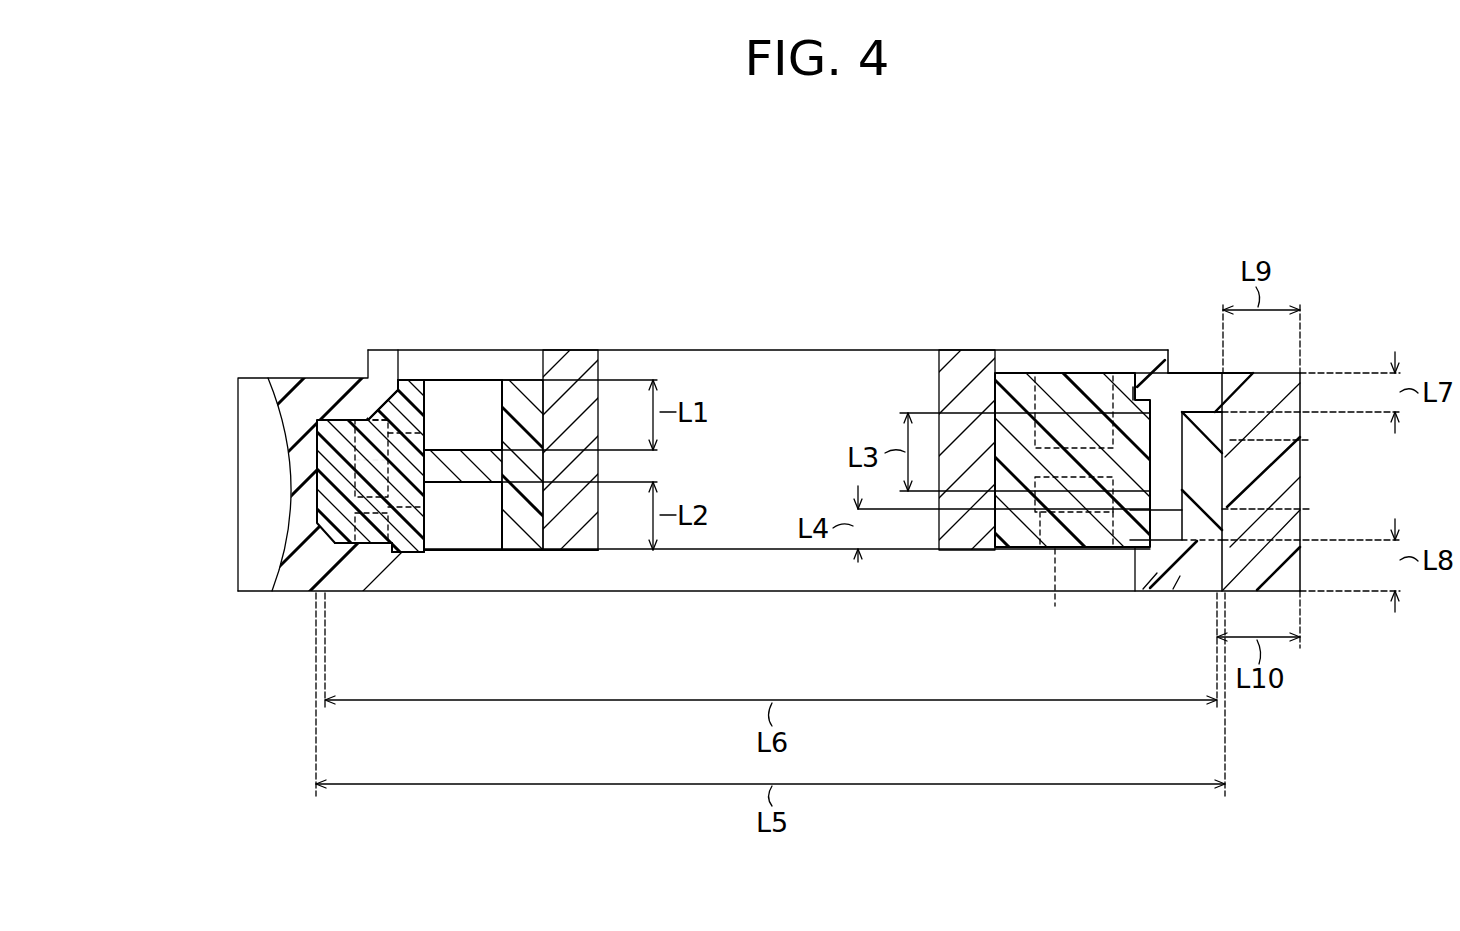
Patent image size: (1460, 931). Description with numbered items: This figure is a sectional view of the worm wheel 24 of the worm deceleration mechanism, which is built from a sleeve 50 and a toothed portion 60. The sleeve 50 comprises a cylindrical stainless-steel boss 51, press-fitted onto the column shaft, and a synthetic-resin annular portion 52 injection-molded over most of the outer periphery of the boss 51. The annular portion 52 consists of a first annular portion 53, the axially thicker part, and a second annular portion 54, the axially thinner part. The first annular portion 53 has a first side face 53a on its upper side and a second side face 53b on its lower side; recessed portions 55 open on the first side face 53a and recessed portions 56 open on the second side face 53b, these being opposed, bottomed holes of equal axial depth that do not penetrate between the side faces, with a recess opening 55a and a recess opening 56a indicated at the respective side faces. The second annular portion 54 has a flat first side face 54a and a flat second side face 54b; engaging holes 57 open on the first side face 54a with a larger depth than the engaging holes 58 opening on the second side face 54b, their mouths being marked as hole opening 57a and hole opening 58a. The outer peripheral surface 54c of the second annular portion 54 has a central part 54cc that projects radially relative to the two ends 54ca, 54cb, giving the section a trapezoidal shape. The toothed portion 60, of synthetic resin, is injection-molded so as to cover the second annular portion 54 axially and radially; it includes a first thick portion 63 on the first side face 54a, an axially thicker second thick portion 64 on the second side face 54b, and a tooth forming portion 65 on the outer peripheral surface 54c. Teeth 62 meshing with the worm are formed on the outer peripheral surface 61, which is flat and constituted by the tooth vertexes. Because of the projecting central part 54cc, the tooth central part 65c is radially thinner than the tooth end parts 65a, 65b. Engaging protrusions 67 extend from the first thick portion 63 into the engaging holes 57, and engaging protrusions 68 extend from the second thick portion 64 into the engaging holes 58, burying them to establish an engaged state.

The worm wheel 24 is at (956, 190).
The sleeve 50 is at (518, 290).
The boss 51 is at (584, 348).
The annular portion 52 is at (527, 377).
The first annular portion 53 is at (516, 552).
The first side face 53a is at (415, 350).
The second side face 53b is at (410, 557).
The second annular portion 54 is at (393, 560).
The first side face 54a is at (362, 417).
The second side face 54b is at (340, 548).
The outer peripheral surface 54c is at (155, 428).
The end 54ca is at (317, 434).
The central part 54cc is at (317, 474).
The end 54cb is at (317, 514).
The recessed portion 55 is at (441, 382).
The outer surface of adhesive layer 55a is at (493, 379).
The recessed portion 56 is at (416, 560).
The gap end 56a is at (470, 560).
The engaging hole 57 is at (428, 428).
The spacer end face 57a is at (375, 388).
The engaging hole 58 is at (428, 507).
The spacer end face 58a is at (372, 556).
The toothed portion 60 is at (268, 377).
The outer peripheral surface 61 is at (1268, 403).
The teeth 62 is at (262, 592).
The first thick portion 63 is at (1173, 351).
The second thick portion 64 is at (1148, 592).
The tooth forming portion 65 is at (1373, 425).
The tooth end part 65a is at (1290, 427).
The tooth end part 65b is at (1272, 535).
The tooth central part 65c is at (1302, 470).
The engaging protrusion 67 is at (1188, 400).
The engaging protrusion 68 is at (1192, 556).